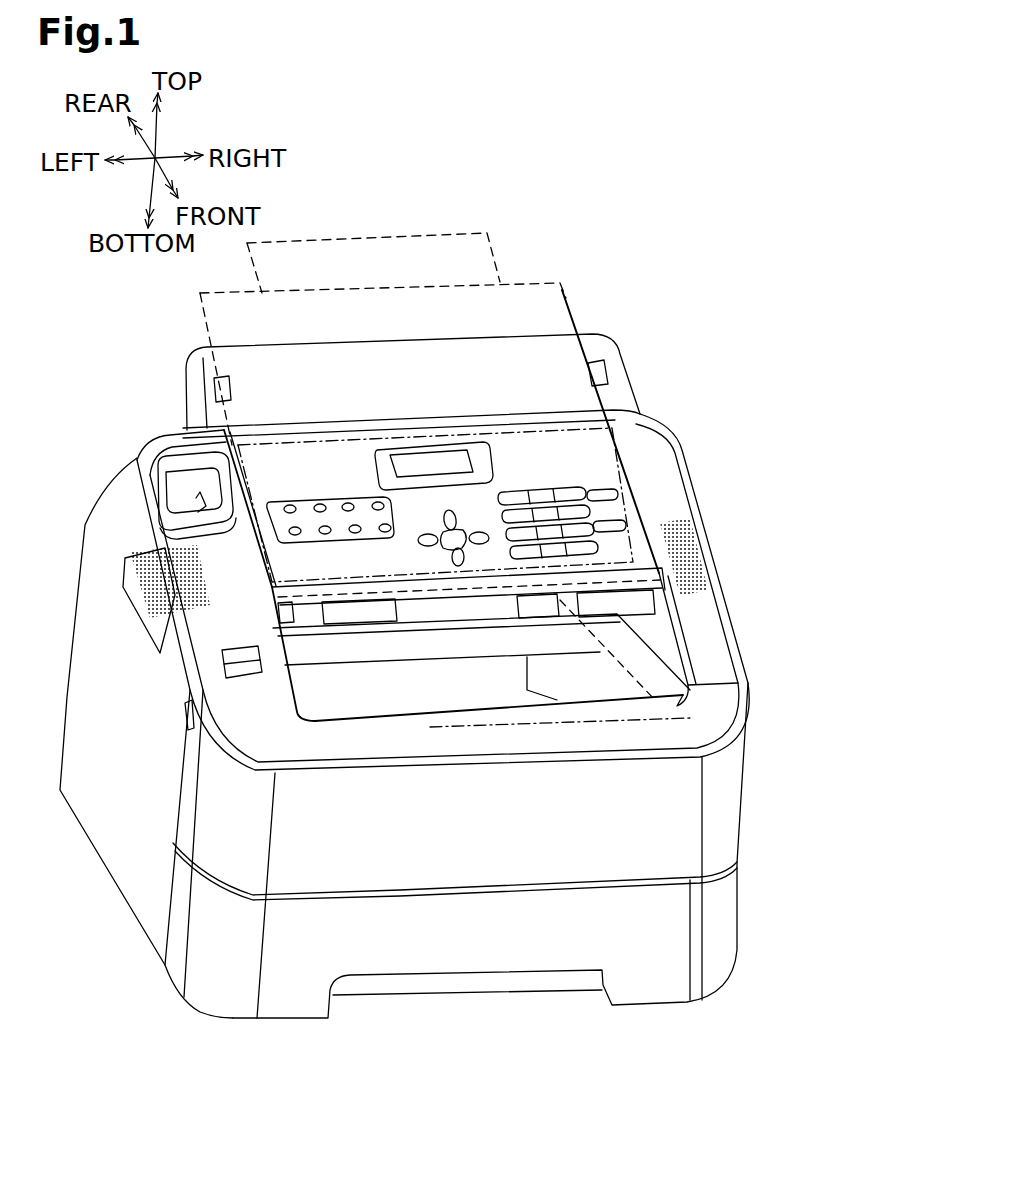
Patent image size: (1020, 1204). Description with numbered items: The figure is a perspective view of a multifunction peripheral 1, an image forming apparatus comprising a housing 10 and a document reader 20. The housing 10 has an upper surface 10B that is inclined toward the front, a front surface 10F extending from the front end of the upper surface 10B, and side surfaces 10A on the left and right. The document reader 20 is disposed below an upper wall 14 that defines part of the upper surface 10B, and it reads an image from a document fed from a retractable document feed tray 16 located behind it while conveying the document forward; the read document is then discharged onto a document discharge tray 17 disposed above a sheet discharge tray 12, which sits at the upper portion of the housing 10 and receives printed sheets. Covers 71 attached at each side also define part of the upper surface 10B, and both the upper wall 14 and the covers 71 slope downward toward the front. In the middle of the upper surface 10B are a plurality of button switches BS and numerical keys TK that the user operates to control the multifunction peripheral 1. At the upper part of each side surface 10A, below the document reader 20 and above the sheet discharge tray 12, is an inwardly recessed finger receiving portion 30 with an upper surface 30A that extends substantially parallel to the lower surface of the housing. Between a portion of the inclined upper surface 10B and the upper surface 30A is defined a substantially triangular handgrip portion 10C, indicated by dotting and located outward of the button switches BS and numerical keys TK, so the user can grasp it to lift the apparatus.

The multifunction peripheral 1 is at (560, 236).
The housing 10 is at (673, 428).
The side surface 10A is at (108, 826).
The upper surface 10B is at (662, 478).
The handgrip portion 10C is at (147, 550).
The front surface 10F is at (718, 807).
The sheet discharge tray 12 is at (354, 687).
The upper wall 14 is at (290, 470).
The document feed tray 16 is at (555, 352).
The document discharge tray 17 is at (610, 737).
The document reader 20 is at (630, 453).
The finger receiving portion 30 is at (137, 603).
The upper surface of finger receiving portion 30A is at (122, 583).
The cover 71 is at (212, 648).
The button switch BS is at (350, 505).
The numerical key TK is at (542, 498).